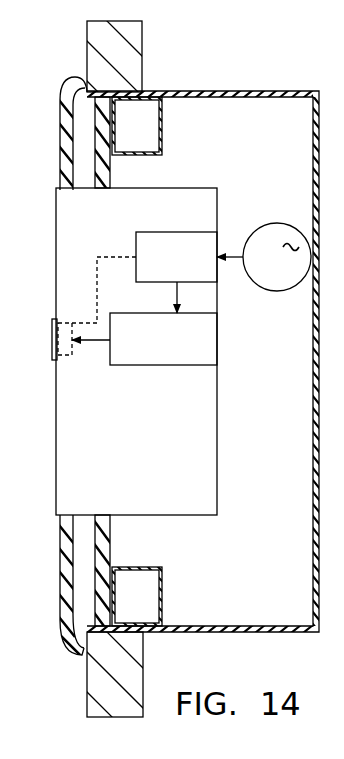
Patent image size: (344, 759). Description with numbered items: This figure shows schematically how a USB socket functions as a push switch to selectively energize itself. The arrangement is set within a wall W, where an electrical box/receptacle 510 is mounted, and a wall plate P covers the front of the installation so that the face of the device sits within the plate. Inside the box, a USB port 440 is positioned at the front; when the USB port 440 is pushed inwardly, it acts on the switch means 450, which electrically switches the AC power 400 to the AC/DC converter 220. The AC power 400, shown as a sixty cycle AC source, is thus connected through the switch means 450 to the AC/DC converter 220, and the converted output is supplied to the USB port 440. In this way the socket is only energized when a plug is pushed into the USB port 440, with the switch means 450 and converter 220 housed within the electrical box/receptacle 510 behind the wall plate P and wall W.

The wall W is at (88, 50).
The wall plate P is at (60, 587).
The electrical box/receptacle 510 is at (242, 90).
The AC power 400 is at (277, 223).
The switch means 450 is at (187, 232).
The AC/DC converter 220 is at (163, 367).
The USB port 440 is at (52, 323).